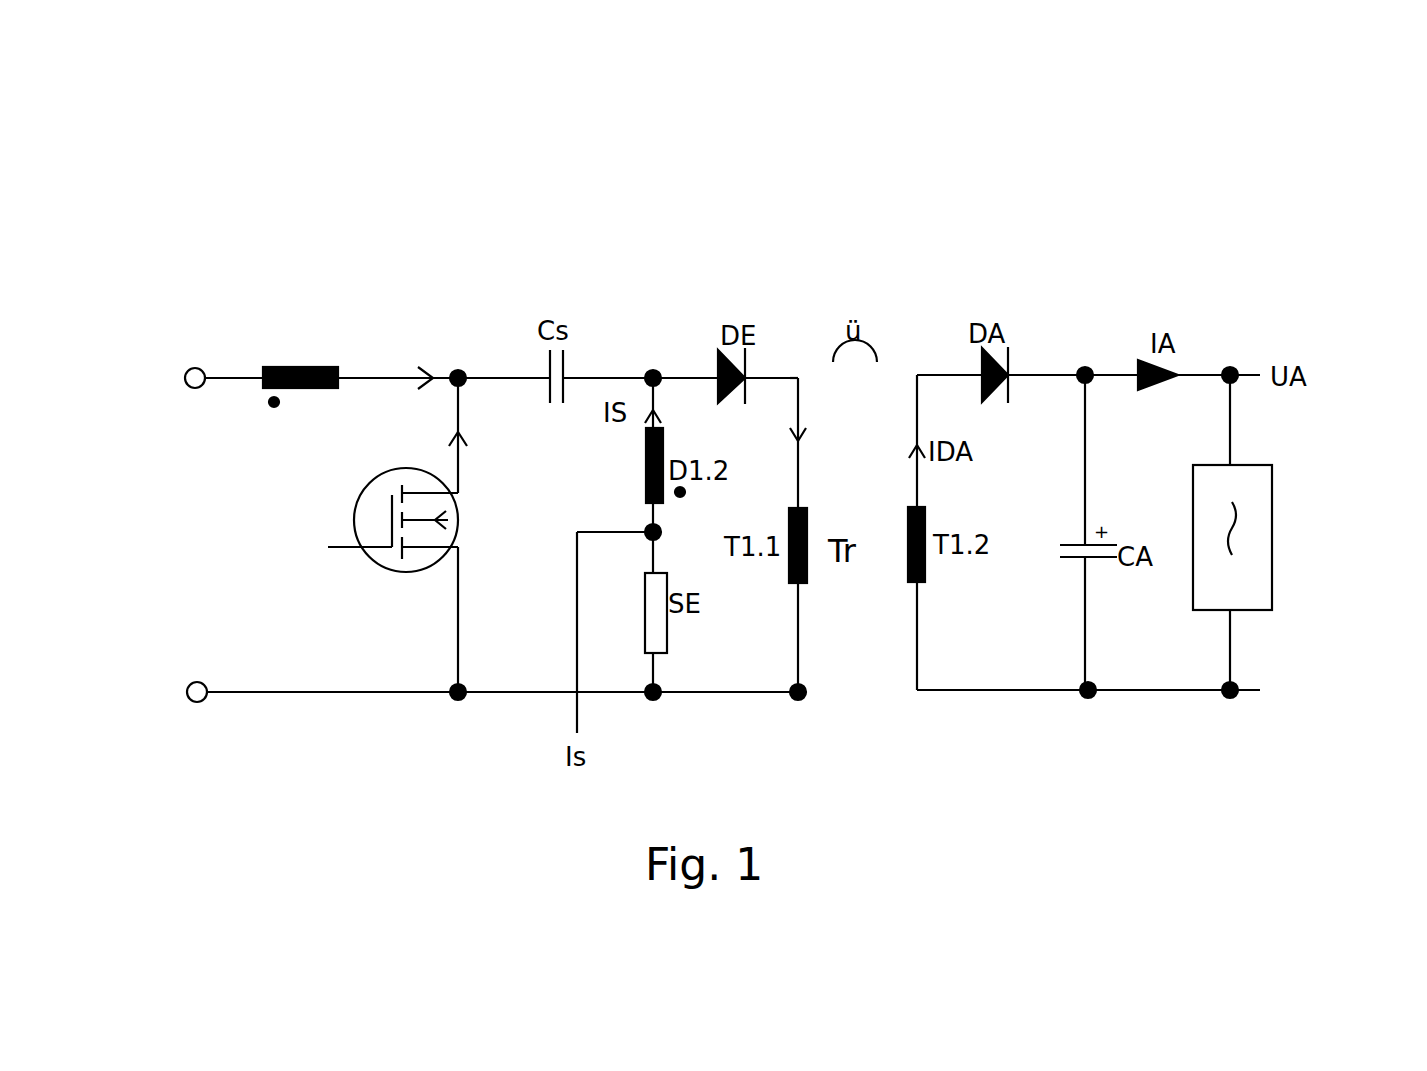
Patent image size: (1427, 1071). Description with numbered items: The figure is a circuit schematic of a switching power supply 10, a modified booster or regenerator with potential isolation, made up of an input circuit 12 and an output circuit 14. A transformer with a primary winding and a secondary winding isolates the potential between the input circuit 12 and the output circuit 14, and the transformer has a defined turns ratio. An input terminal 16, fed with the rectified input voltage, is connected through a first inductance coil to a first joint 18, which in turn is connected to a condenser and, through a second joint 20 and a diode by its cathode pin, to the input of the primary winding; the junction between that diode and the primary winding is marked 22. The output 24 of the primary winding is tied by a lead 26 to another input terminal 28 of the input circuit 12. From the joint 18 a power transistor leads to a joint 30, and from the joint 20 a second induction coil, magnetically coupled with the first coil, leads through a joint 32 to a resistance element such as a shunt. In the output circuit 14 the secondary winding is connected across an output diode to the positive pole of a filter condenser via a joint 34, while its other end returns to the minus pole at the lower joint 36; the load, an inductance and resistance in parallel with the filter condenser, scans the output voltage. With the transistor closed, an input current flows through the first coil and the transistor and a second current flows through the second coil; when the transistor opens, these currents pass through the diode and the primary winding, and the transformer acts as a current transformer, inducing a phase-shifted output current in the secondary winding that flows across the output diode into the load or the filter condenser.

The switching power supply 10 is at (286, 205).
The input circuit 12 is at (177, 522).
The output circuit 14 is at (1347, 476).
The input terminal 16 is at (194, 368).
The first joint 18 is at (456, 366).
The second joint 20 is at (650, 366).
The third node 22 is at (794, 362).
The output of the primary winding 24 is at (802, 705).
The lead 26 is at (316, 705).
The input terminal 28 is at (200, 703).
The joint 30 is at (460, 705).
The joint 32 is at (657, 705).
The joint 34 is at (1084, 362).
The output reference node 36 is at (1090, 703).